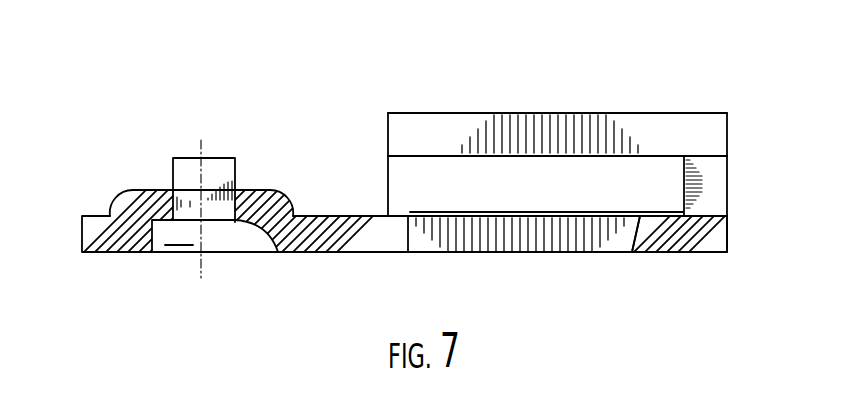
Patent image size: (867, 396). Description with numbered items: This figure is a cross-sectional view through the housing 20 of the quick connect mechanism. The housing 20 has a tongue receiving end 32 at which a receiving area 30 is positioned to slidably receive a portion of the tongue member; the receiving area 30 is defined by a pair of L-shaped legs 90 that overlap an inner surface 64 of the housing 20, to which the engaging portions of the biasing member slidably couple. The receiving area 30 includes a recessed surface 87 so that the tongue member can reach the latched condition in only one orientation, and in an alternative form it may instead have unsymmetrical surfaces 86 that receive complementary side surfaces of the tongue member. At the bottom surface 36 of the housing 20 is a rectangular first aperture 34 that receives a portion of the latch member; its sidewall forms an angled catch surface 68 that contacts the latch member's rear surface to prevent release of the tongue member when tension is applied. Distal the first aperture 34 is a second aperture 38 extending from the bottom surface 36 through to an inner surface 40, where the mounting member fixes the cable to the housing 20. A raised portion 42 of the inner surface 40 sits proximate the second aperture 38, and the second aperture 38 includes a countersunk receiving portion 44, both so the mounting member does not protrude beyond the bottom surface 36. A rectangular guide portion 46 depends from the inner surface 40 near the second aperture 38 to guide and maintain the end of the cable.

The housing 20 is at (154, 86).
The receiving area 30 is at (536, 186).
The tongue receiving end 32 is at (729, 85).
The first aperture 34 is at (524, 234).
The bottom surface 36 is at (718, 253).
The second aperture 38 is at (226, 231).
The inner surface 40 is at (360, 213).
The raised portion 42 is at (147, 190).
The receiving portion 44 is at (150, 222).
The guide portion 46 is at (212, 157).
The inner surface 64 is at (698, 215).
The catch surface 68 is at (635, 232).
The unsymmetrical surfaces 86 is at (717, 172).
The recessed surface 87 is at (693, 163).
The L-shaped legs 90 is at (433, 112).